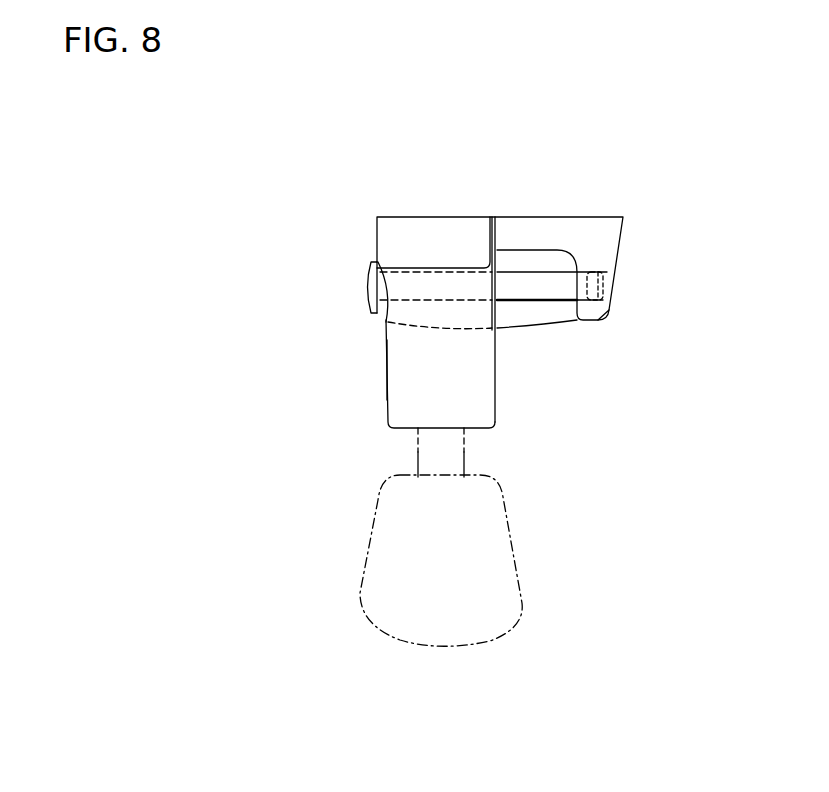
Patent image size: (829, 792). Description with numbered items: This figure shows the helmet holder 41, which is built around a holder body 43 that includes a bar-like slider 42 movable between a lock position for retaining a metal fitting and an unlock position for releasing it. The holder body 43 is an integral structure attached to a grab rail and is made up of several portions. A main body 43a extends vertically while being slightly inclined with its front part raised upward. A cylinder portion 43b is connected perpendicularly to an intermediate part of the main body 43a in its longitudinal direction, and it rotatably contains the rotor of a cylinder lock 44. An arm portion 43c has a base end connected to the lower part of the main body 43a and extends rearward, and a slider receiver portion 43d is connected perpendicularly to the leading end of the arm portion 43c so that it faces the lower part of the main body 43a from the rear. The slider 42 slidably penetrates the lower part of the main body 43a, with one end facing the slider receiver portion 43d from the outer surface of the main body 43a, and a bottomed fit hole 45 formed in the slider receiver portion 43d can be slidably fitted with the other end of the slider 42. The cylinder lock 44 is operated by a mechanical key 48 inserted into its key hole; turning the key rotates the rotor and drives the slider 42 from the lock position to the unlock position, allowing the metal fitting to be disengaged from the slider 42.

The helmet holder 41 is at (527, 208).
The slider 42 is at (540, 290).
The holder body 43 is at (366, 232).
The main body 43a is at (450, 216).
The cylinder portion 43b is at (397, 347).
The arm portion 43c is at (558, 226).
The slider receiver portion 43d is at (612, 313).
The cylinder lock 44 is at (378, 393).
The fit hole 45 is at (612, 290).
The mechanical key 48 is at (520, 575).